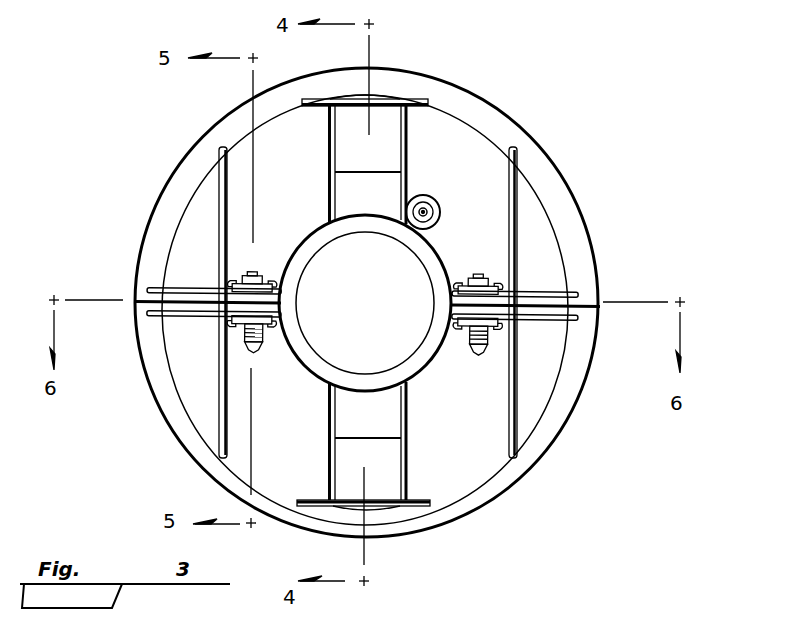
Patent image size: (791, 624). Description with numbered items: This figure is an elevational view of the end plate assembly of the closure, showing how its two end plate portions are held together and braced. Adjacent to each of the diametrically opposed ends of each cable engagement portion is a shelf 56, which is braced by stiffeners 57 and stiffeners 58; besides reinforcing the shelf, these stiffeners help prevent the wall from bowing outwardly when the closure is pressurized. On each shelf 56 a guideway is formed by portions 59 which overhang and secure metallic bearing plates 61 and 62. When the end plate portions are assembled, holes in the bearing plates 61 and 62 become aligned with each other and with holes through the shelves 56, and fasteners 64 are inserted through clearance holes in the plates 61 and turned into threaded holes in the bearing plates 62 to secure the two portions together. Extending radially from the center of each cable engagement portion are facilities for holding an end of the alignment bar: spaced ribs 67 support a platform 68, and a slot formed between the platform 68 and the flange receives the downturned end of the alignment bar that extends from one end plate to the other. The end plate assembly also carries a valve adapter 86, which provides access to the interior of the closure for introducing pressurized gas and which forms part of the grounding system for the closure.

The shelf 56 is at (497, 332).
The stiffeners 57 is at (547, 296).
The stiffeners 58 is at (520, 190).
The overhanging portions 59 is at (505, 275).
The bearing plate 61 is at (232, 291).
The bearing plate 62 is at (245, 338).
The fasteners 64 is at (252, 275).
The ribs 67 is at (410, 132).
The platform 68 is at (385, 99).
The valve adapter 86 is at (432, 198).